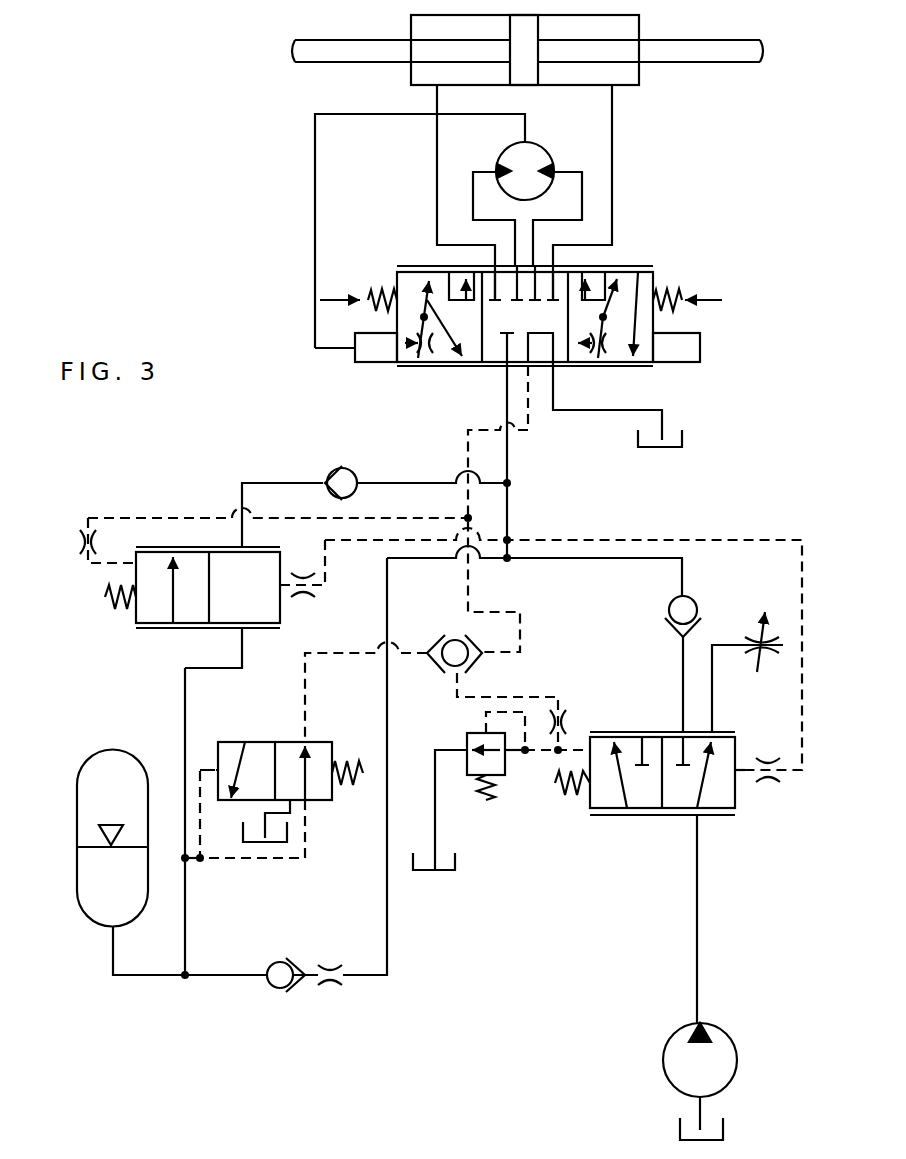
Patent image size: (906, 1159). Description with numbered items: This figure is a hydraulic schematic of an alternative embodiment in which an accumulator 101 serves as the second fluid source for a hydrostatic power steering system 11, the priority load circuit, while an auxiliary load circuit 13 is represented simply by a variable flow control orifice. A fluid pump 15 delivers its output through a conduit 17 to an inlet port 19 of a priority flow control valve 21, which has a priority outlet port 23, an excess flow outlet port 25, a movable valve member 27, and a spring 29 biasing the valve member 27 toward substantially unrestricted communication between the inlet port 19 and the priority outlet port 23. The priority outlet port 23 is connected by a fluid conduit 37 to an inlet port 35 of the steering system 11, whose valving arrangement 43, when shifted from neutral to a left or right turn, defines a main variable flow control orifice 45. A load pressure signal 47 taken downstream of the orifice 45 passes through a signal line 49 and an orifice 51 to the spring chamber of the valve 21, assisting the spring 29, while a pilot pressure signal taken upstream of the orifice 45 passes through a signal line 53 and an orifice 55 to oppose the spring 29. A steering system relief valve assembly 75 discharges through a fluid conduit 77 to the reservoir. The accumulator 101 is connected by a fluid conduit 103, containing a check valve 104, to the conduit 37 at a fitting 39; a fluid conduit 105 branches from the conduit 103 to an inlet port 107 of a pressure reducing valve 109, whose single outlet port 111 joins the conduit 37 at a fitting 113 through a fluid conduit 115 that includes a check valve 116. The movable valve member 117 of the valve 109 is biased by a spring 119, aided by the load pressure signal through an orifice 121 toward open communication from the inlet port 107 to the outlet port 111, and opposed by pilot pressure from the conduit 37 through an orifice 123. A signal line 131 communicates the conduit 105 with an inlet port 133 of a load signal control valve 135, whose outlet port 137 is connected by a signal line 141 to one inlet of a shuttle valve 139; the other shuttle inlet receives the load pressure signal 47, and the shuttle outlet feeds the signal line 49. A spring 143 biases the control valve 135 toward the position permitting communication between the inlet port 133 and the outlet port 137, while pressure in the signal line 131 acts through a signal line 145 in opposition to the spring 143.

The hydrostatic power steering system 11 is at (668, 228).
The auxiliary load circuit 13 is at (735, 627).
The fluid pump 15 is at (763, 996).
The conduit 17 is at (698, 912).
The inlet port 19 is at (697, 820).
The priority flow control valve 21 is at (611, 828).
The priority outlet port 23 is at (683, 730).
The excess flow outlet port 25 is at (714, 731).
The movable valve member 27 is at (735, 797).
The spring 29 is at (556, 790).
The inlet port 35 is at (505, 366).
The fluid conduit 37 is at (594, 560).
The fitting 39 is at (508, 563).
The valving arrangement 43 is at (392, 276).
The variable flow control orifice 45 is at (409, 350).
The load pressure signal 47 is at (531, 428).
The signal line 49 is at (128, 517).
The orifice 51 is at (567, 725).
The signal line 53 is at (372, 562).
The orifice 55 is at (768, 760).
The steering system relief valve assembly 75 is at (445, 744).
The fluid conduit 77 is at (437, 823).
The accumulator 101 is at (65, 772).
The fluid conduit 103 is at (131, 978).
The check valve 104 is at (293, 987).
The fluid conduit 105 is at (188, 903).
The inlet port 107 is at (242, 634).
The pressure reducing valve 109 is at (125, 631).
The outlet port 111 is at (242, 546).
The fitting 113 is at (512, 483).
The fluid conduit 115 is at (275, 483).
The check valve 116 is at (325, 472).
The movable valve member 117 is at (281, 613).
The spring 119 is at (106, 604).
The orifice 121 is at (82, 551).
The orifice 123 is at (298, 574).
The signal line 131 is at (247, 862).
The inlet port 133 is at (305, 803).
The load signal control valve 135 is at (258, 736).
The outlet port 137 is at (307, 740).
The shuttle valve 139 is at (451, 628).
The signal line 141 is at (383, 650).
The spring 143 is at (363, 768).
The signal line 145 is at (203, 808).